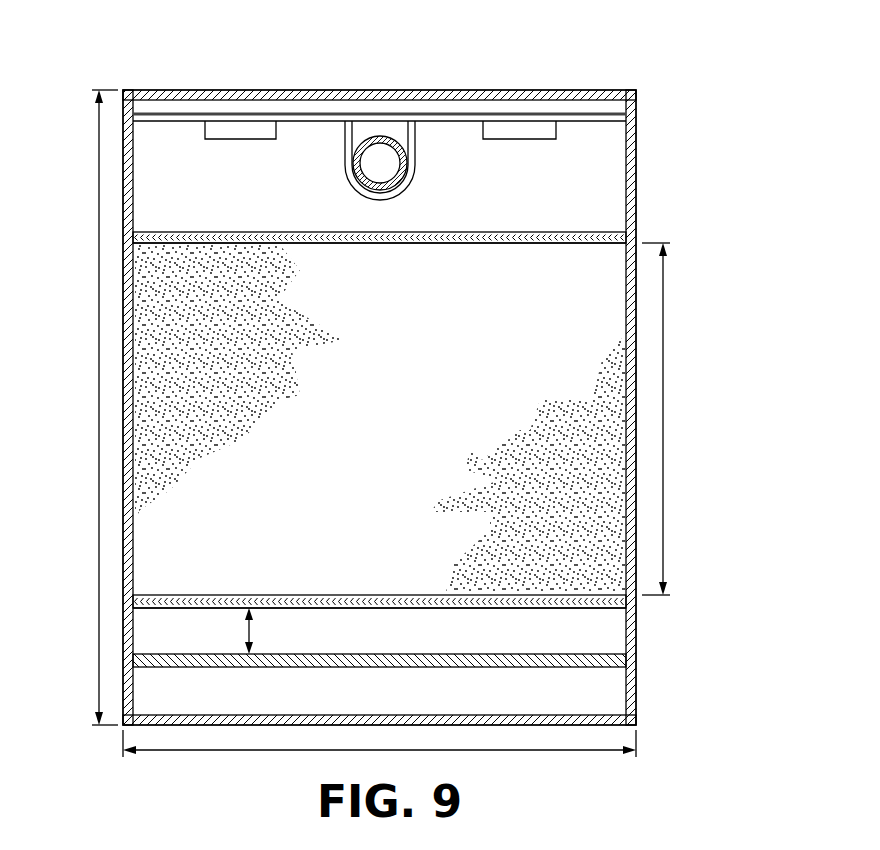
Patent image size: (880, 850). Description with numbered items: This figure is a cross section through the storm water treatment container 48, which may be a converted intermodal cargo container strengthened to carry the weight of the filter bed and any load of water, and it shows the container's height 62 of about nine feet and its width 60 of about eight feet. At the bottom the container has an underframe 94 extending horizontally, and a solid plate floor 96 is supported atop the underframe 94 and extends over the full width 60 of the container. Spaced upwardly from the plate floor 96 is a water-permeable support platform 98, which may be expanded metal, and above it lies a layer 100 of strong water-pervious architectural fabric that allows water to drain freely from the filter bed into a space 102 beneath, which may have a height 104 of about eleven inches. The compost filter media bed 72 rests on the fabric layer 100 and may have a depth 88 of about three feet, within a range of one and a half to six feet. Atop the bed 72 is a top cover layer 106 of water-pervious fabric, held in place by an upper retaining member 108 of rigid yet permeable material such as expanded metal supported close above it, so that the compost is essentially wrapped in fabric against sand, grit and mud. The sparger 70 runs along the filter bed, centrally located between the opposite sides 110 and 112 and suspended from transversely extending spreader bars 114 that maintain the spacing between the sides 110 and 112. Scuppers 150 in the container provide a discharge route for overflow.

The treatment container 48 is at (555, 66).
The width 60 is at (513, 750).
The height 62 is at (99, 333).
The sparger 70 is at (404, 150).
The compost filter media bed 72 is at (392, 422).
The depth 88 is at (663, 490).
The underframe 94 is at (245, 725).
The plate floor 96 is at (449, 667).
The support platform 98 is at (436, 608).
The fabric layer 100 is at (399, 595).
The space 102 is at (400, 640).
The height 104 is at (249, 632).
The top cover layer 106 is at (447, 243).
The upper retaining member 108 is at (455, 232).
The side 110 is at (123, 405).
The side 112 is at (637, 407).
The spreader bars 114 is at (310, 121).
The scuppers 150 is at (240, 139).